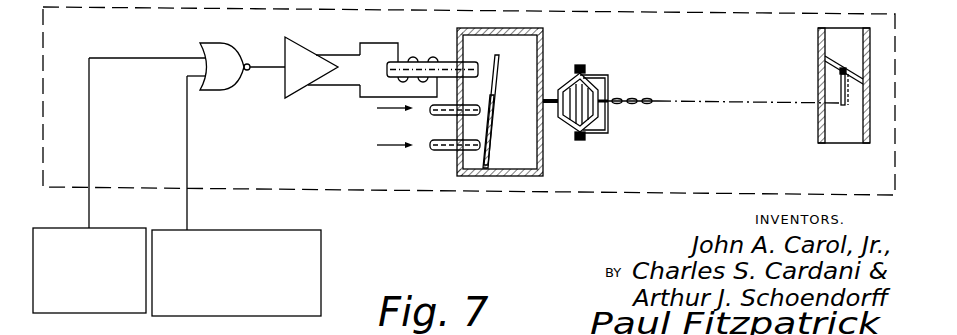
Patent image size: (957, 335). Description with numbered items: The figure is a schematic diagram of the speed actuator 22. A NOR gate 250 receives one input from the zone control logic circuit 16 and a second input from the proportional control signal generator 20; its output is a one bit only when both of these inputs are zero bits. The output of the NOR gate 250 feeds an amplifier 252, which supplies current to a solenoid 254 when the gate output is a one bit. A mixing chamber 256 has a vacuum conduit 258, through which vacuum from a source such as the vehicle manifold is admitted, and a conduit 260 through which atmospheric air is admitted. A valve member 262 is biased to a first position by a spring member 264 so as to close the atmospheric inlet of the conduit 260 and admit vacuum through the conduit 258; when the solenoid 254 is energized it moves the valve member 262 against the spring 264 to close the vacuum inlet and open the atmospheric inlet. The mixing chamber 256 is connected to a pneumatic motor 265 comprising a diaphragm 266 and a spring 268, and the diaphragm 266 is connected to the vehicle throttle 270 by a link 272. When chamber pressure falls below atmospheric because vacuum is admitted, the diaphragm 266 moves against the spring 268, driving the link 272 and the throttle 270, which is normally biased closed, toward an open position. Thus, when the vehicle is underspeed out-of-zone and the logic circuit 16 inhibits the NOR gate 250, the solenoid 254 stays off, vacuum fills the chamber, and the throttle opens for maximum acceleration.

The zone control logic circuit 16 is at (136, 236).
The proportional control signal generator 20 is at (313, 238).
The speed actuator 22 is at (521, 190).
The NOR gate 250 is at (215, 45).
The amplifier 252 is at (288, 92).
The solenoid 254 is at (437, 60).
The mixing chamber 256 is at (534, 38).
The vacuum conduit 258 is at (437, 113).
The atmospheric air conduit 260 is at (438, 151).
The valve member 262 is at (490, 151).
The spring member 264 is at (473, 162).
The pneumatic motor 265 is at (594, 74).
The diaphragm 266 is at (606, 87).
The spring 268 is at (584, 140).
The vehicle throttle 270 is at (840, 87).
The link 272 is at (634, 108).